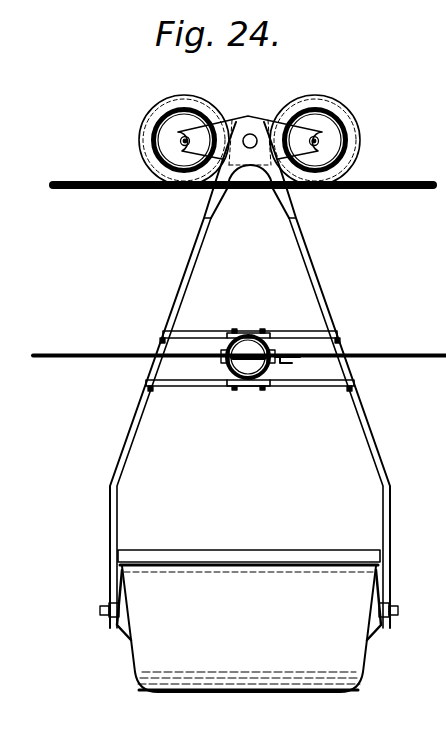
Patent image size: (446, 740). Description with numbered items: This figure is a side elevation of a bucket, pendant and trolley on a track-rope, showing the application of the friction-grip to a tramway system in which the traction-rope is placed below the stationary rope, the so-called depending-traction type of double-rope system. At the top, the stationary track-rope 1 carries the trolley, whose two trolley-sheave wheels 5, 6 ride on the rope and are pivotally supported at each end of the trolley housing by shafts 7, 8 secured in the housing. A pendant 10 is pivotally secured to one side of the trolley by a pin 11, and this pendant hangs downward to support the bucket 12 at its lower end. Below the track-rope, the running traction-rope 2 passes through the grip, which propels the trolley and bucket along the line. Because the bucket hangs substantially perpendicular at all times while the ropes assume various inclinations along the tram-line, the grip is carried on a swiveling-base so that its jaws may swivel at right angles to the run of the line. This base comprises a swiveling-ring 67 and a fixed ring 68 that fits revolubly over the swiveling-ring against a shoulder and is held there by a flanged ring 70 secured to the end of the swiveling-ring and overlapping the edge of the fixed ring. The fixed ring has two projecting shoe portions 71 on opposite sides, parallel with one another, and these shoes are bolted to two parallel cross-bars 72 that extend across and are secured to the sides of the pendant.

The track-rope 1 is at (106, 190).
The traction-rope 2 is at (92, 348).
The trolley-sheave wheel 5 is at (141, 138).
The trolley-sheave wheel 6 is at (361, 128).
The shaft 7 is at (156, 118).
The shaft 8 is at (334, 116).
The pendant 10 is at (309, 256).
The pin 11 is at (250, 134).
The bucket 12 is at (249, 621).
The swiveling-ring 67 is at (225, 365).
The fixed ring 68 is at (278, 366).
The flanged ring 70 is at (251, 335).
The shoe portion 71 is at (238, 332).
The cross-bar 72 is at (288, 331).